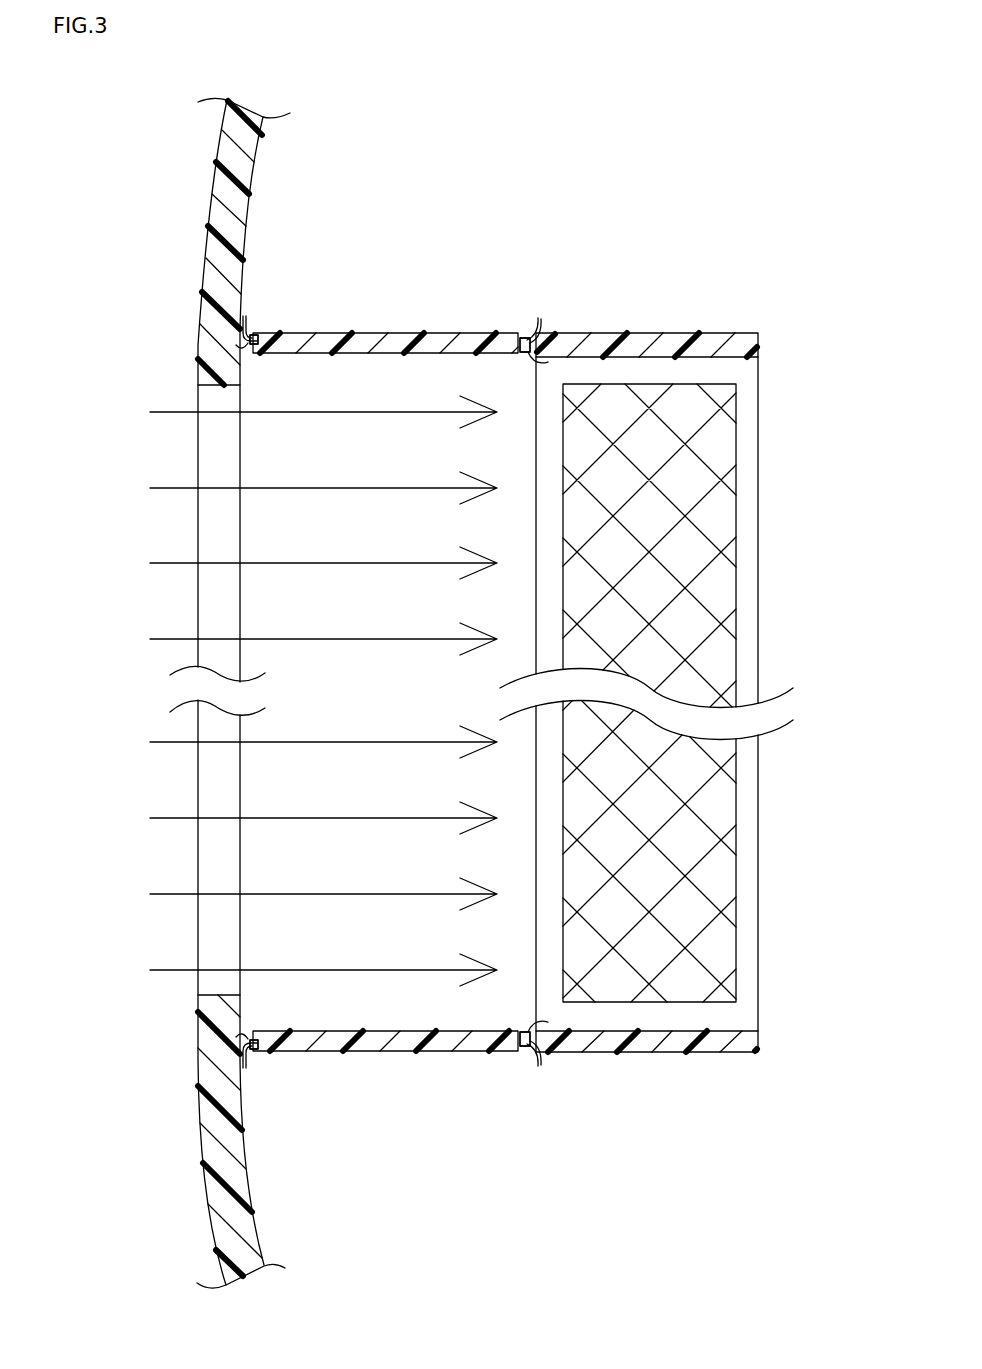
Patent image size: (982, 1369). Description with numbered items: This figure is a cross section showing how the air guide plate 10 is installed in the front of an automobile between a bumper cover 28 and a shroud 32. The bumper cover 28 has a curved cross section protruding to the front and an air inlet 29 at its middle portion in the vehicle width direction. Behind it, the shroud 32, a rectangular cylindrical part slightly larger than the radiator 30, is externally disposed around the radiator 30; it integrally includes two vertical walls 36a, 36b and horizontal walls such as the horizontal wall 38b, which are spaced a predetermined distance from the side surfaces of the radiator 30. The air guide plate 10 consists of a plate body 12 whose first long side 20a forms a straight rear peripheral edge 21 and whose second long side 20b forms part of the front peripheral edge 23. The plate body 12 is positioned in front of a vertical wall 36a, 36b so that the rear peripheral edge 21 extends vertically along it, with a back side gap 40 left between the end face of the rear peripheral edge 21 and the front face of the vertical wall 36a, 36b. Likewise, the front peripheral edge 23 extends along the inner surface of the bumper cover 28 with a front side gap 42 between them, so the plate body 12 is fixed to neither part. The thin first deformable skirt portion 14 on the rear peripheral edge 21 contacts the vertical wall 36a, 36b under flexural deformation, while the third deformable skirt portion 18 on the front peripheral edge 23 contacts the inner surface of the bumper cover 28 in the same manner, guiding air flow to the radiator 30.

The air guide plate 10 is at (411, 301).
The plate body 12 is at (381, 345).
The first deformable skirt portion 14 is at (537, 325).
The third deformable skirt portion 18 is at (250, 336).
The first long side 20a is at (514, 700).
The second long side 20b is at (304, 697).
The rear peripheral edge 21 is at (524, 340).
The front peripheral edge 23 is at (258, 338).
The bumper cover 28 is at (207, 274).
The air inlet 29 is at (200, 393).
The radiator 30 is at (739, 604).
The shroud 32 is at (684, 685).
The vertical wall 36a is at (656, 343).
The vertical wall 36b is at (640, 1045).
The horizontal wall 38b is at (745, 456).
The back side gap 40 is at (538, 356).
The front side gap 42 is at (238, 346).